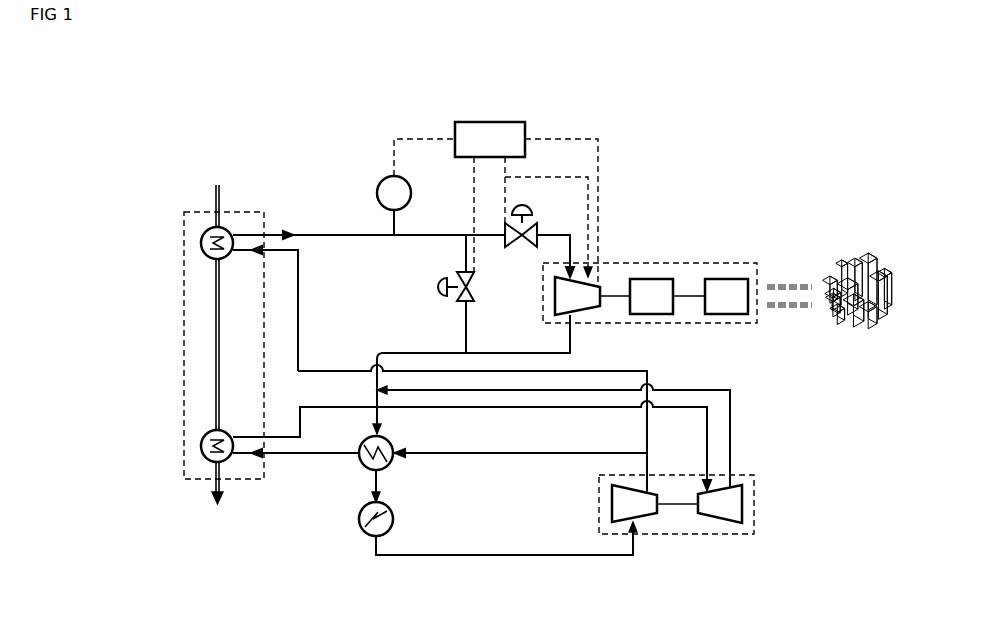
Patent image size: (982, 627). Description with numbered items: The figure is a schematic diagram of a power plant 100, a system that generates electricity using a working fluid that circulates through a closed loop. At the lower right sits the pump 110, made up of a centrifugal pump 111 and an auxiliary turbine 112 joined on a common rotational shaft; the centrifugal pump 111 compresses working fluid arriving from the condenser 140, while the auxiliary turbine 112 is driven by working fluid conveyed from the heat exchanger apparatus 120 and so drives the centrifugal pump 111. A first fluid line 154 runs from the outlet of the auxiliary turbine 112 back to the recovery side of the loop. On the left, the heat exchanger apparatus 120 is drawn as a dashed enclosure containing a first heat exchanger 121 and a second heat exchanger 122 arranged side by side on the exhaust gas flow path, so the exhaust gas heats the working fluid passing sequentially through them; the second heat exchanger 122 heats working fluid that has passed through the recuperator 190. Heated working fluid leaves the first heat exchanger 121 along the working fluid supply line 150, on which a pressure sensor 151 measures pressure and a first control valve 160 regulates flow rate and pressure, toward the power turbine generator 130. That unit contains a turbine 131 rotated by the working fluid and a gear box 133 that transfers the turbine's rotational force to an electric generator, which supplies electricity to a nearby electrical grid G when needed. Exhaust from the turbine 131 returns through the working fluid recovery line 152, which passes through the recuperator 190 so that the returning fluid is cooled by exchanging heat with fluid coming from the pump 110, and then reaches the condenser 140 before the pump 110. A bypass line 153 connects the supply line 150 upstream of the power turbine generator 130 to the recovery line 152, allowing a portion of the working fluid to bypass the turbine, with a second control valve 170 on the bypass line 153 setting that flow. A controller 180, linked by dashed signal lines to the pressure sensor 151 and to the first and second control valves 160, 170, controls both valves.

The power plant 100 is at (263, 103).
The pump 110 is at (714, 528).
The centrifugal pump 111 is at (651, 524).
The auxiliary turbine 112 is at (723, 524).
The heat exchanger apparatus 120 is at (184, 320).
The first heat exchanger 121 is at (201, 243).
The second heat exchanger 122 is at (201, 445).
The power turbine generator 130 is at (677, 269).
The turbine 131 is at (600, 289).
The gear box 133 is at (655, 279).
The condenser 140 is at (358, 525).
The working fluid supply line 150 is at (433, 235).
The pressure sensor 151 is at (377, 191).
The working fluid recovery line 152 is at (572, 345).
The bypass line 153 is at (466, 330).
The first fluid line 154 is at (733, 390).
The first control valve 160 is at (522, 250).
The second control valve 170 is at (457, 272).
The controller 180 is at (490, 122).
The recuperator 190 is at (358, 463).
The electrical grid G is at (863, 252).